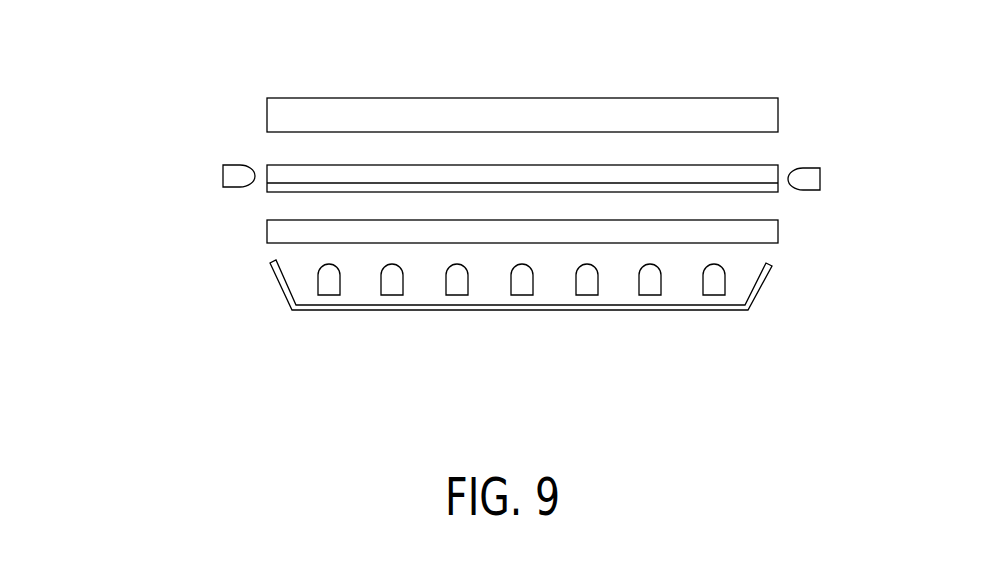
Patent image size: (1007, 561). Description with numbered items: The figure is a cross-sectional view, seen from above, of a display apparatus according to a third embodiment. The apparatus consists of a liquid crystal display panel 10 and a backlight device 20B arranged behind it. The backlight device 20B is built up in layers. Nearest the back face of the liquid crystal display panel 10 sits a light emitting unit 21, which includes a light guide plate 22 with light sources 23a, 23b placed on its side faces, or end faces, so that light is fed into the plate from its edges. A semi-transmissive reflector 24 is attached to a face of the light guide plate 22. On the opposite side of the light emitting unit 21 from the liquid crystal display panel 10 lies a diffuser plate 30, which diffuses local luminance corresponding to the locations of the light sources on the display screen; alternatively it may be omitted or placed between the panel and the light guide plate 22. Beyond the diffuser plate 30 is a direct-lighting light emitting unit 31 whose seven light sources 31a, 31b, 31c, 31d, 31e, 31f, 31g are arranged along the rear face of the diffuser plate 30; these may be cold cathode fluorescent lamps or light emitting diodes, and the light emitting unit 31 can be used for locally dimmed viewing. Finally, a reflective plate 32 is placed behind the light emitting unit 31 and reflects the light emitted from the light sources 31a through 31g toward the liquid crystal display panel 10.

The liquid crystal display panel 10 is at (727, 107).
The backlight device 20B is at (108, 225).
The light emitting unit 21 is at (152, 176).
The light guide plate 22 is at (489, 172).
The light source 23a is at (232, 167).
The light source 23b is at (811, 171).
The semi-transmissive reflector 24 is at (645, 190).
The diffuser plate 30 is at (779, 230).
The direct-lighting light emitting unit 31 is at (538, 405).
The light source 31a is at (329, 295).
The light source 31b is at (392, 295).
The light source 31c is at (457, 295).
The light source 31d is at (522, 295).
The light source 31e is at (587, 295).
The light source 31f is at (650, 295).
The light source 31g is at (714, 295).
The reflective plate 32 is at (768, 280).